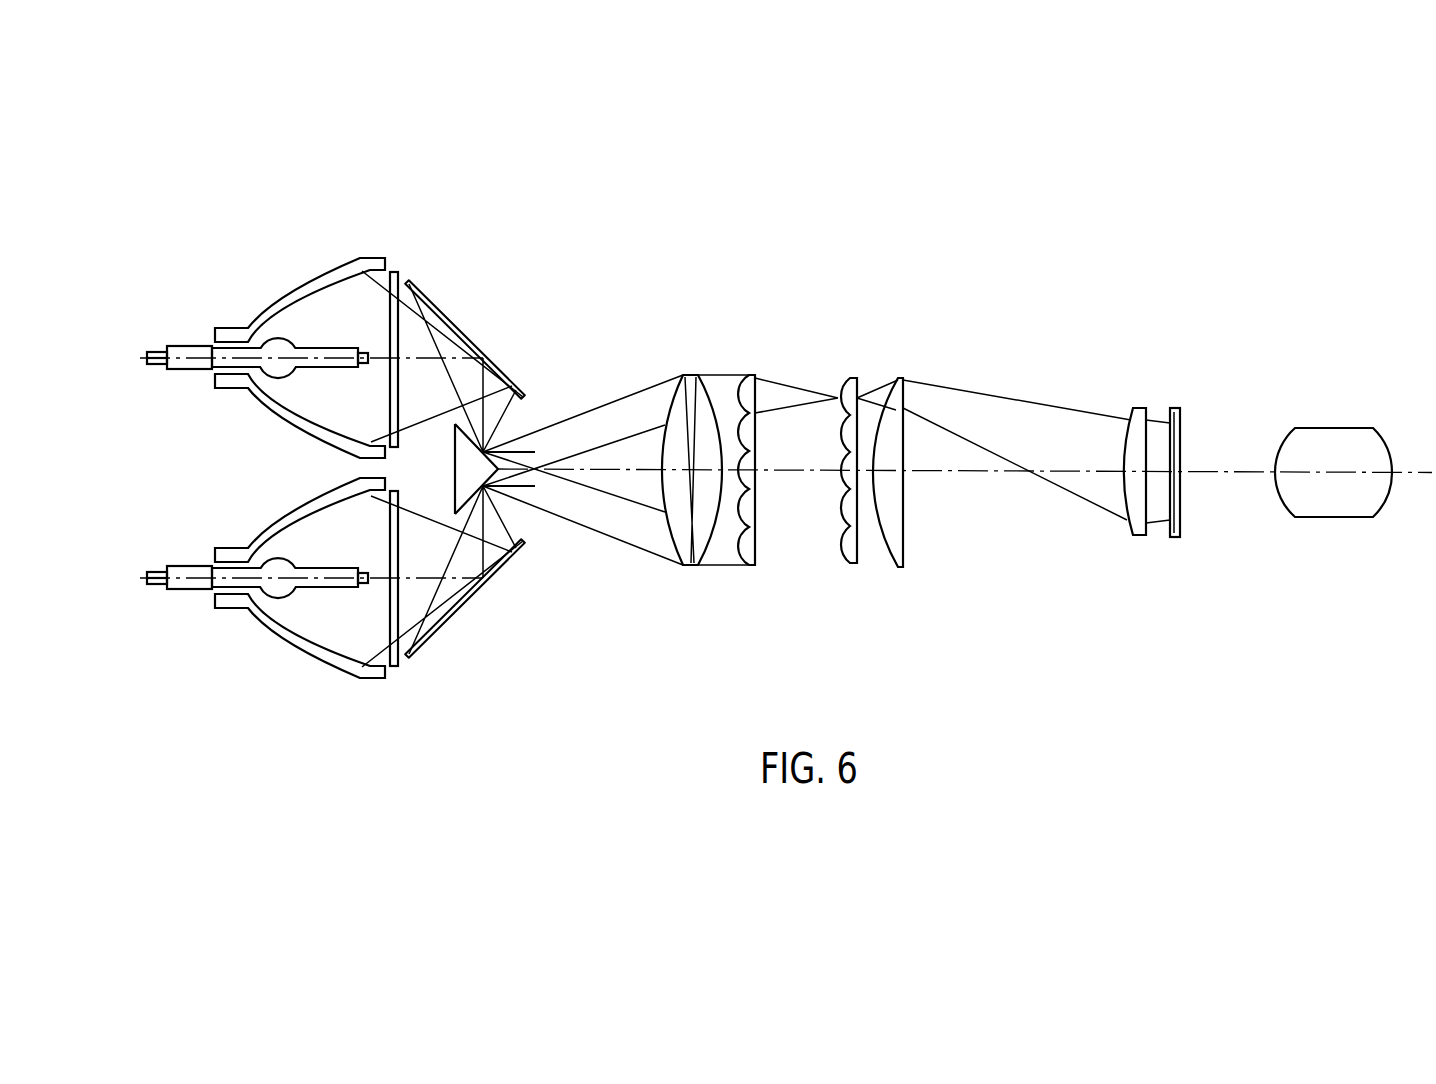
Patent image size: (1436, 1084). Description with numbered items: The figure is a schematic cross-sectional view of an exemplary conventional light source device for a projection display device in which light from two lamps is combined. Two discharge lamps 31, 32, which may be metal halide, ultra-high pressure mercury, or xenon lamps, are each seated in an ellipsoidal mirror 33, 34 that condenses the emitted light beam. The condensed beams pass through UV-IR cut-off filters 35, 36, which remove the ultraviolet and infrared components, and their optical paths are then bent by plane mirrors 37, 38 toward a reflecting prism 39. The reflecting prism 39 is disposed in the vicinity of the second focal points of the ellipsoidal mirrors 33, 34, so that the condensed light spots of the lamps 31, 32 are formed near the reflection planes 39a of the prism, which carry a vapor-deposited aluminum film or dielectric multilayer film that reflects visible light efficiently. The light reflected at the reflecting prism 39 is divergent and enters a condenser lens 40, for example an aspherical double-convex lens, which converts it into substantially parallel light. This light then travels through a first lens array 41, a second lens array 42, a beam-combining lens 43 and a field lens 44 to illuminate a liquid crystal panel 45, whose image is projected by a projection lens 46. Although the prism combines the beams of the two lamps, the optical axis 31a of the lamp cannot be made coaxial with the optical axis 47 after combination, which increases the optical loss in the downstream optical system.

The discharge lamp 31 is at (185, 346).
The discharge lamp 32 is at (185, 590).
The optical axis 31a is at (515, 450).
The ellipsoidal mirror 33 is at (300, 289).
The ellipsoidal mirror 34 is at (300, 648).
The UV-IR cut-off filter 35 is at (394, 272).
The UV-IR cut-off filter 36 is at (395, 667).
The plane mirror 37 is at (457, 330).
The plane mirror 38 is at (460, 604).
The reflecting prism 39 is at (454, 470).
The reflection plane 39a is at (477, 447).
The condenser lens 40 is at (689, 375).
The first lens array 41 is at (749, 375).
The second lens array 42 is at (851, 378).
The beam-combining lens 43 is at (898, 378).
The field lens 44 is at (1137, 408).
The liquid crystal panel 45 is at (1175, 408).
The projection lens 46 is at (1335, 428).
The optical axis 47 is at (970, 474).